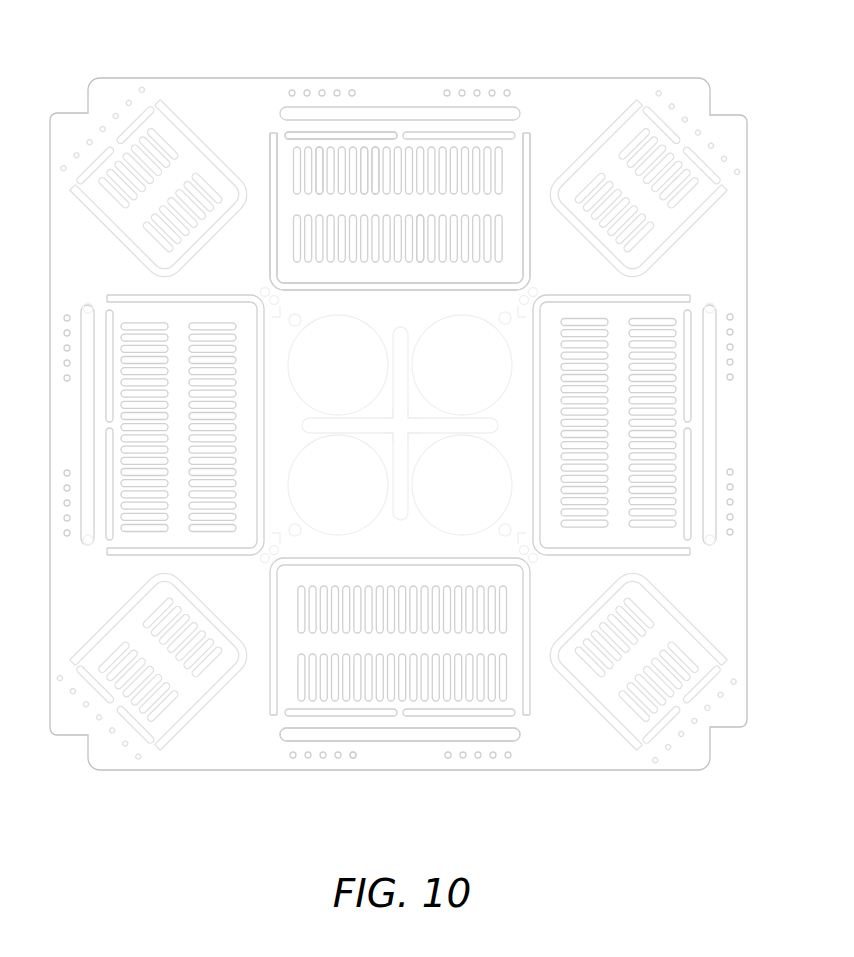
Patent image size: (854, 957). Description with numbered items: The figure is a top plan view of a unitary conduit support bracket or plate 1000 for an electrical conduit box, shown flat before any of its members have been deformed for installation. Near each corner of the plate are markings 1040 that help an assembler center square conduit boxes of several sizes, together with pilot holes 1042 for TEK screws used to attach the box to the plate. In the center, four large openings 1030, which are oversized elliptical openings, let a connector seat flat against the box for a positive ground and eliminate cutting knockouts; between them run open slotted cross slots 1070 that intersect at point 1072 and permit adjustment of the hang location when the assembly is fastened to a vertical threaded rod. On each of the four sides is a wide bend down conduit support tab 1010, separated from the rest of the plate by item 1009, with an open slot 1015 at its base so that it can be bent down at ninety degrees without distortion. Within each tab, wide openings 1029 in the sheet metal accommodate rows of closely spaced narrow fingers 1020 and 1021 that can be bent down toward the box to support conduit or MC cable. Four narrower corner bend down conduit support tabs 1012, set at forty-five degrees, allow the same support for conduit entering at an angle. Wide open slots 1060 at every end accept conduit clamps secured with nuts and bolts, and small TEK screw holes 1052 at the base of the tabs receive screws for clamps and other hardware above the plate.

The conduit support bracket or plate 1000 is at (172, 38).
The item separating tabs from plate 1009 is at (272, 148).
The bend down conduit support tab 1010 is at (505, 272).
The narrower corner bend down conduit support tab 1012 is at (638, 193).
The open slot 1015 is at (365, 138).
The narrow bend down finger 1020 is at (372, 188).
The finger 1021 is at (418, 227).
The wide opening 1029 is at (325, 203).
The large opening 1030 is at (457, 490).
The marking 1040 is at (247, 563).
The hole 1042 is at (271, 556).
The TEK screw hole 1052 is at (352, 757).
The open slot 1060 is at (428, 735).
The cross slot 1070 is at (455, 425).
The intersection point 1072 is at (398, 427).